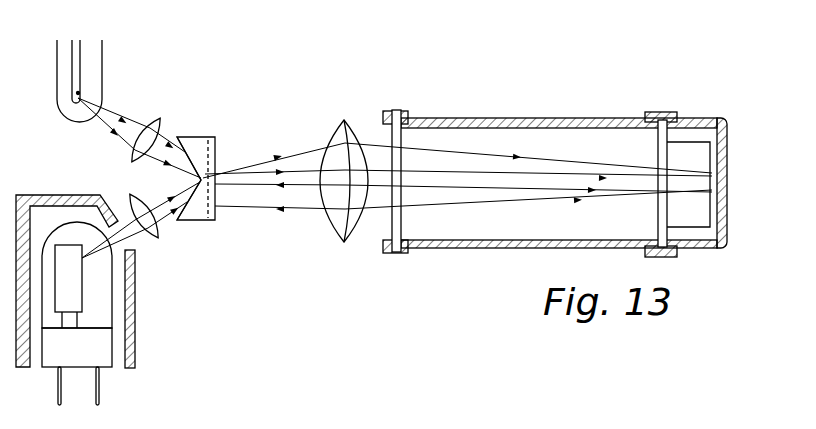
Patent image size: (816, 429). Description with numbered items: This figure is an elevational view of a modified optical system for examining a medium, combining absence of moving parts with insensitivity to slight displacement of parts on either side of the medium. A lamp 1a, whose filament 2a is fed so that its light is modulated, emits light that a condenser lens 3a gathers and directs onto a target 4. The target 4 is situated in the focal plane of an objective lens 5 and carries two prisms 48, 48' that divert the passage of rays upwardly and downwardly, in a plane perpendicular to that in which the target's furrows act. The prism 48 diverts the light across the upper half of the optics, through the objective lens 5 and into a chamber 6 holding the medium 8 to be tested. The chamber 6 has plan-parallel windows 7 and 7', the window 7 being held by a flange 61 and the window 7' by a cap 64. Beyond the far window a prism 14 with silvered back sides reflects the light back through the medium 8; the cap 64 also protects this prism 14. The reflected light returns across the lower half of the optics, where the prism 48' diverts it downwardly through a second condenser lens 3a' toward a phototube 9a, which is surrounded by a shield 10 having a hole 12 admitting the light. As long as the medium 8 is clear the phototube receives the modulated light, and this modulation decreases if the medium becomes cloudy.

The lamp 1a is at (103, 80).
The filament 2a is at (80, 92).
The condenser lens 3a is at (174, 129).
The condenser lens 3a' is at (179, 227).
The target 4 is at (217, 147).
The prism 48 is at (189, 147).
The prism 48' is at (204, 211).
The objective lens 5 is at (335, 130).
The chamber 6 is at (553, 119).
The window 7 is at (383, 170).
The window 7' is at (642, 169).
The medium 8 is at (488, 142).
The flange 61 is at (393, 113).
The cap 64 is at (655, 113).
The prism 14 is at (708, 155).
The shield 10 is at (136, 348).
The hole 12 is at (133, 247).
The phototube 9a is at (113, 350).